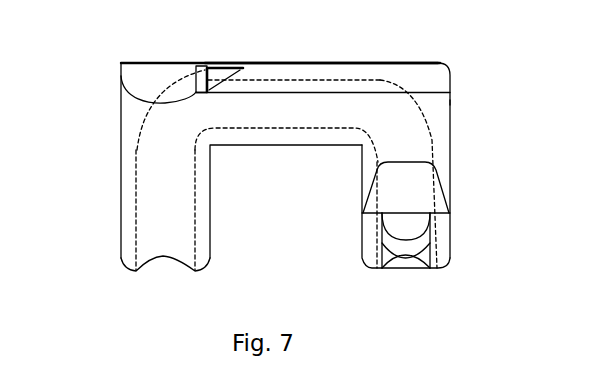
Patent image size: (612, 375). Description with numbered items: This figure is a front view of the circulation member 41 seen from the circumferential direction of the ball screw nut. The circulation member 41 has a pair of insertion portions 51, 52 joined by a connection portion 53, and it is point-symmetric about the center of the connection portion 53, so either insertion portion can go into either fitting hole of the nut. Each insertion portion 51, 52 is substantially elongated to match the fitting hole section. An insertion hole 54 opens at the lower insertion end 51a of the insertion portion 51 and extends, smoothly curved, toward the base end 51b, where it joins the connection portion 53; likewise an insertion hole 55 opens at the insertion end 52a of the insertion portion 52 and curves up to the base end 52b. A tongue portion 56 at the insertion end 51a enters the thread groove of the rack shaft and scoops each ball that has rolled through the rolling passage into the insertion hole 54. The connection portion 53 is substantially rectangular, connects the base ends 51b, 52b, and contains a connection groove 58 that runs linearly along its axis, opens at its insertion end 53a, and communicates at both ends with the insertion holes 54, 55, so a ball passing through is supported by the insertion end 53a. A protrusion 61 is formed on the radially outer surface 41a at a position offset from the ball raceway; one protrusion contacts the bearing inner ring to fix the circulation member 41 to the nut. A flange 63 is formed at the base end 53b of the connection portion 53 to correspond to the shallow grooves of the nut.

The circulation member 41 is at (539, 61).
The outer surface 41a is at (149, 68).
The insertion portion 51 is at (362, 200).
The insertion end 51a is at (445, 243).
The base end 51b is at (450, 103).
The insertion portion 52 is at (212, 200).
The insertion end 52a is at (128, 238).
The base end 52b is at (122, 103).
The connection portion 53 is at (316, 63).
The insertion end 53a is at (287, 146).
The base end 53b is at (331, 92).
The insertion hole 54 is at (440, 174).
The insertion hole 55 is at (143, 178).
The tongue portion 56 is at (405, 258).
The connection groove 58 is at (249, 63).
The protrusion 61 is at (201, 64).
The flange 63 is at (428, 66).